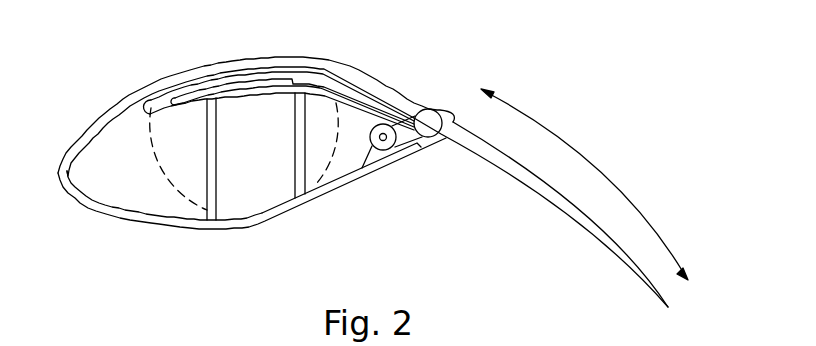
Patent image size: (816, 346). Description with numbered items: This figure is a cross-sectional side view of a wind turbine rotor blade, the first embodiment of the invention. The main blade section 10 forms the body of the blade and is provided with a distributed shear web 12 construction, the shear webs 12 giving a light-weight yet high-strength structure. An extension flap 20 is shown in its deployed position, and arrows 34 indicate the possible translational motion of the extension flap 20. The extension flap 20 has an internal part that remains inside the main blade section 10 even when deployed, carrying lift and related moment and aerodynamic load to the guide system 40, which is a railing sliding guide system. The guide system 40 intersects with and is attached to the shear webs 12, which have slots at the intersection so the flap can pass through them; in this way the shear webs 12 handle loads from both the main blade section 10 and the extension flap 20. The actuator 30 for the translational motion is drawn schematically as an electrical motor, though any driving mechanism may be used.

The main blade section 10 is at (102, 115).
The shear web 12 is at (219, 196).
The extension flap 20 is at (583, 212).
The actuator 30 is at (364, 158).
The arrows 34 is at (556, 134).
The guide system 40 is at (258, 67).